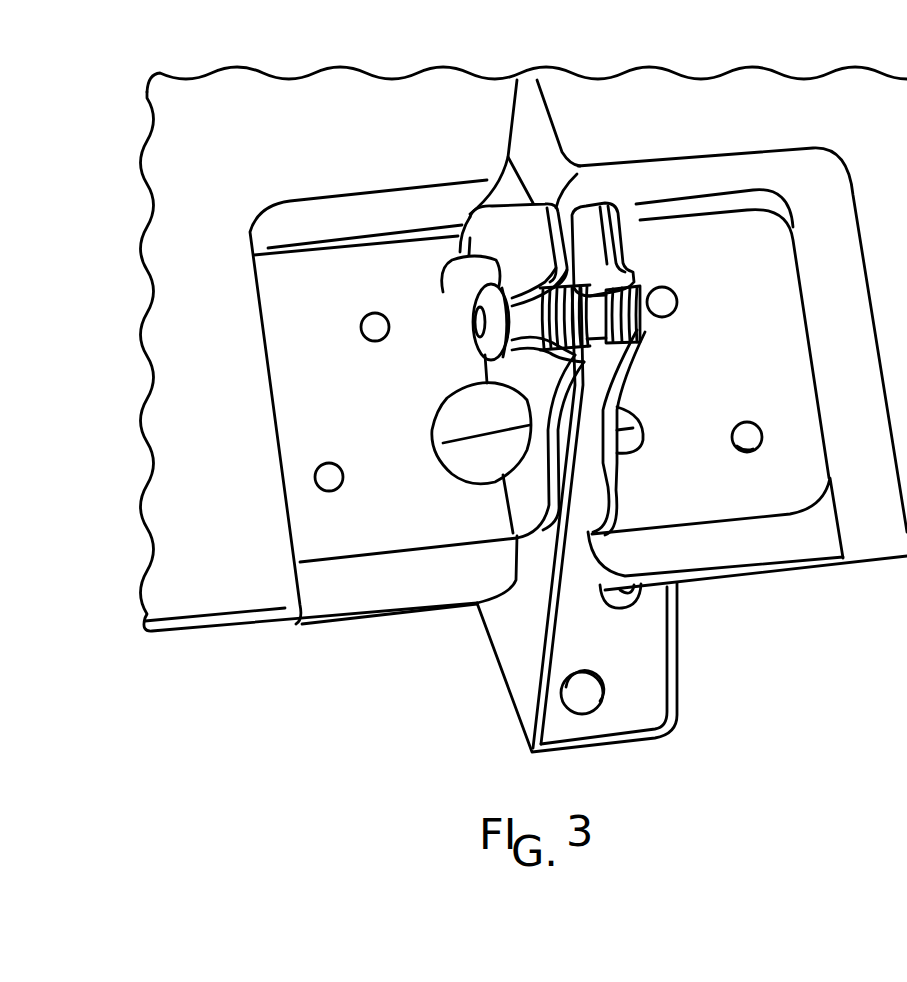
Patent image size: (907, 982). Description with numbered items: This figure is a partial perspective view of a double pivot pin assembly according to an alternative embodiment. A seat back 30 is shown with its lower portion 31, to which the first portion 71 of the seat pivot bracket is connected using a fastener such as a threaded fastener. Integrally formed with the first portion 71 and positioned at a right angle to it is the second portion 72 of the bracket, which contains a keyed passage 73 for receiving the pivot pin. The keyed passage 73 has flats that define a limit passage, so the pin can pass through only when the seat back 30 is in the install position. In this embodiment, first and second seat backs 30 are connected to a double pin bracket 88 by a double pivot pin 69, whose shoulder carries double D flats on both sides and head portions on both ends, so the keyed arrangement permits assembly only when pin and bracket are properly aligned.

The seat back 30 is at (178, 119).
The lower portion 31 is at (775, 530).
The double pivot pin 69 is at (466, 306).
The first portion 71 is at (808, 440).
The second portion 72 is at (533, 240).
The keyed passage 73 is at (615, 306).
The double pin bracket 88 is at (514, 634).